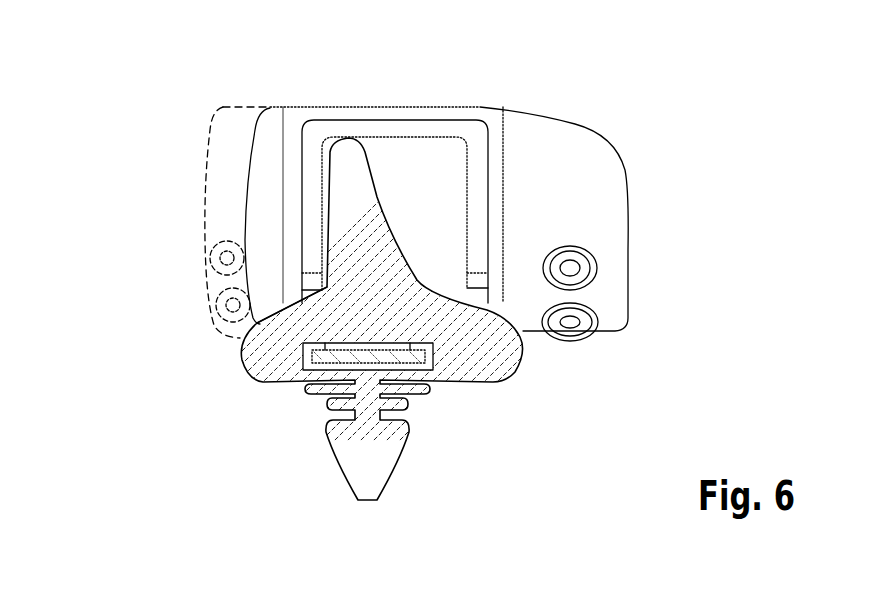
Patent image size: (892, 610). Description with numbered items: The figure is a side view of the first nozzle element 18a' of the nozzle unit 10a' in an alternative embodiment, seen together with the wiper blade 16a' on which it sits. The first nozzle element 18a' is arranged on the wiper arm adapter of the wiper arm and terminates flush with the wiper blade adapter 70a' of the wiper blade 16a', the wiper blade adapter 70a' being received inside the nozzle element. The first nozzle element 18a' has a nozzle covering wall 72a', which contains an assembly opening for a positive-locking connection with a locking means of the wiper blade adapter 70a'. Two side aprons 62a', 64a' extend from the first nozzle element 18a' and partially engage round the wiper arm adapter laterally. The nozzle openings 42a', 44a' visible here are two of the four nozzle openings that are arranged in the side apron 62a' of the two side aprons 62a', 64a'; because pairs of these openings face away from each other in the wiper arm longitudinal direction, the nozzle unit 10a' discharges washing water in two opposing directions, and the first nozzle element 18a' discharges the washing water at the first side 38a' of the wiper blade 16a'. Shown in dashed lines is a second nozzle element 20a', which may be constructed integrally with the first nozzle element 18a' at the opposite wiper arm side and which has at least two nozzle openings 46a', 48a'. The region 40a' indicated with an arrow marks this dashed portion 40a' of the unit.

The nozzle unit 10a' is at (476, 250).
The wiper blade 16a' is at (501, 319).
The first nozzle element 18a' is at (449, 184).
The second nozzle element 20a' is at (186, 222).
The first side 38a' is at (447, 207).
The connecting region 40a' is at (185, 169).
The nozzle opening 42a' is at (640, 268).
The nozzle opening 44a' is at (628, 352).
The nozzle opening 46a' is at (172, 257).
The nozzle opening 48a' is at (175, 300).
The side apron 62a' is at (491, 216).
The side apron 64a' is at (196, 205).
The wiper blade adapter 70a' is at (295, 211).
The nozzle covering wall 72a' is at (487, 167).